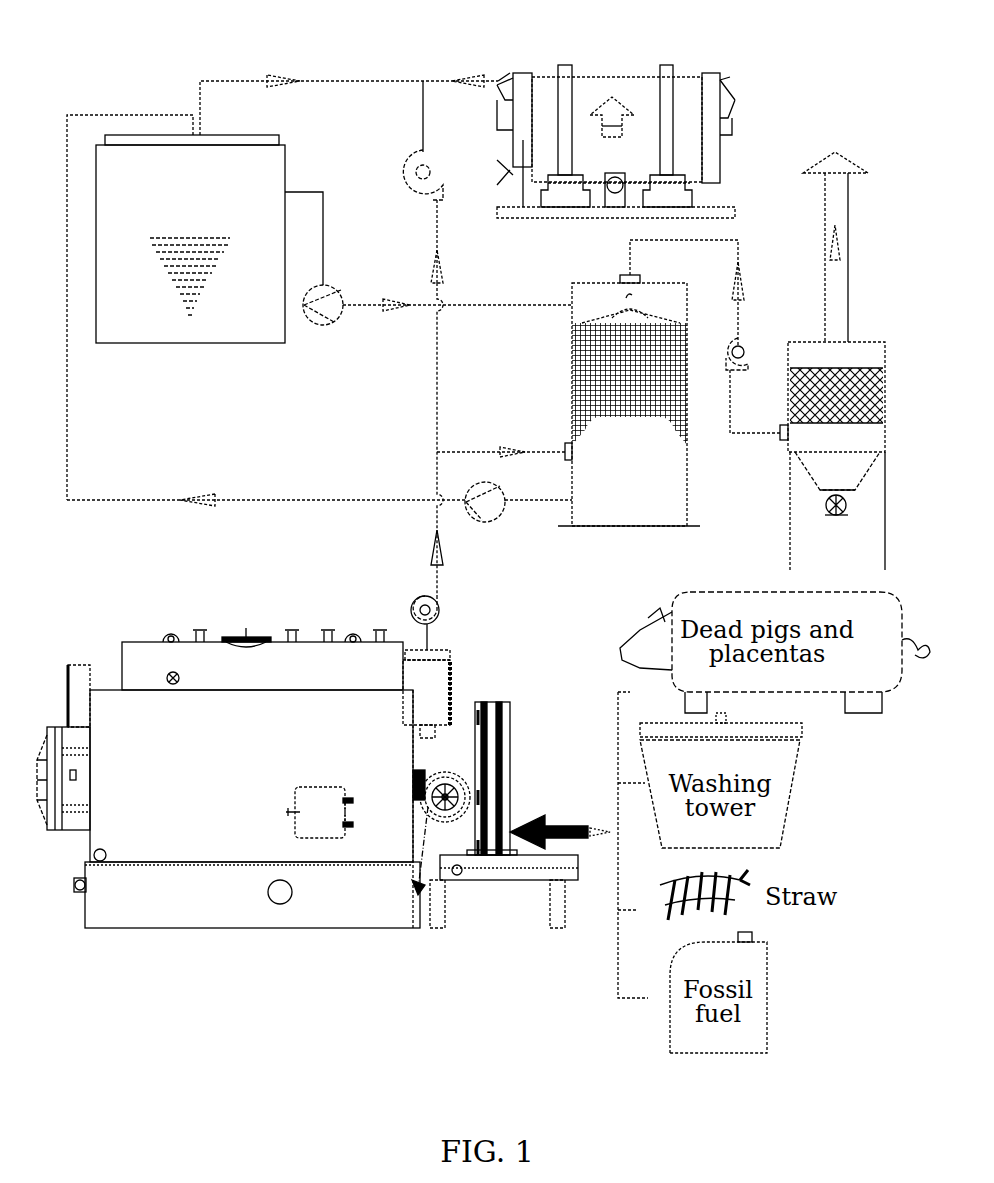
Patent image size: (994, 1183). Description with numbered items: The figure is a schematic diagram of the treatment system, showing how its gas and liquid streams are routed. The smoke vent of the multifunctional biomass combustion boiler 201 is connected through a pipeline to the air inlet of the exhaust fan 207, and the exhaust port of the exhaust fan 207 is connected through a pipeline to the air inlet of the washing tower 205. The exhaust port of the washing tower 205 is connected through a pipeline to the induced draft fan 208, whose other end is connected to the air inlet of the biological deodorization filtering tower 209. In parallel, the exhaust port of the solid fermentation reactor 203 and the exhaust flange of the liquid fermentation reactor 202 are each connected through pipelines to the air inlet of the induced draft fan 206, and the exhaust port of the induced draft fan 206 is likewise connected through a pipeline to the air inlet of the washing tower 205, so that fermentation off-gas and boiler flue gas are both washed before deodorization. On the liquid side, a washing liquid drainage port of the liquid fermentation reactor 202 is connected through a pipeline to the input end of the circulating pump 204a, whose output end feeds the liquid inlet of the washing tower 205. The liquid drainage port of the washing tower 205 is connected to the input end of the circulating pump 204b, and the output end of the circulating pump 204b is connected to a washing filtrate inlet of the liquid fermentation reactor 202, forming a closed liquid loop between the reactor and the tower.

The multifunctional biomass combustion boiler 201 is at (157, 655).
The liquid fermentation reactor 202 is at (195, 135).
The solid fermentation reactor 203 is at (617, 85).
The circulating pump A 204a is at (324, 285).
The circulating pump B 204b is at (530, 568).
The washing tower 205 is at (665, 530).
The induced draft fan 206 is at (423, 150).
The exhaust fan 207 is at (418, 600).
The induced draft fan B 208 is at (740, 340).
The biological deodorization filtering tower 209 is at (872, 342).